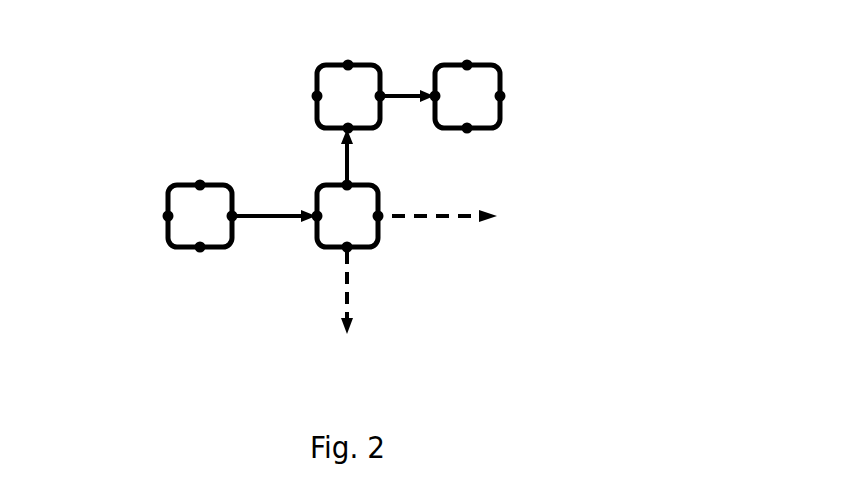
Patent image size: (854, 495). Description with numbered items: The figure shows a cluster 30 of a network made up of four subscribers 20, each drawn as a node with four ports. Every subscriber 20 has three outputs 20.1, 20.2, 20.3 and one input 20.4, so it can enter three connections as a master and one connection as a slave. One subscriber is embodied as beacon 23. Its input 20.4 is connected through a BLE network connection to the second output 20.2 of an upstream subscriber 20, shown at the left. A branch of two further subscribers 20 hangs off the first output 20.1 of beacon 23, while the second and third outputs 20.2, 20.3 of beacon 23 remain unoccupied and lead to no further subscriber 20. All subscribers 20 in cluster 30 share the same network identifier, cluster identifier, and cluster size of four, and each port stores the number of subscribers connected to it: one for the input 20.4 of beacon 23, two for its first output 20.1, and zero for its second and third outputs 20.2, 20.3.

The cluster 30 is at (150, 127).
The subscriber 20 is at (552, 83).
The beacon 23 is at (322, 185).
The first output 20.1 is at (200, 185).
The second output 20.2 is at (232, 216).
The third output 20.3 is at (200, 247).
The input 20.4 is at (168, 216).